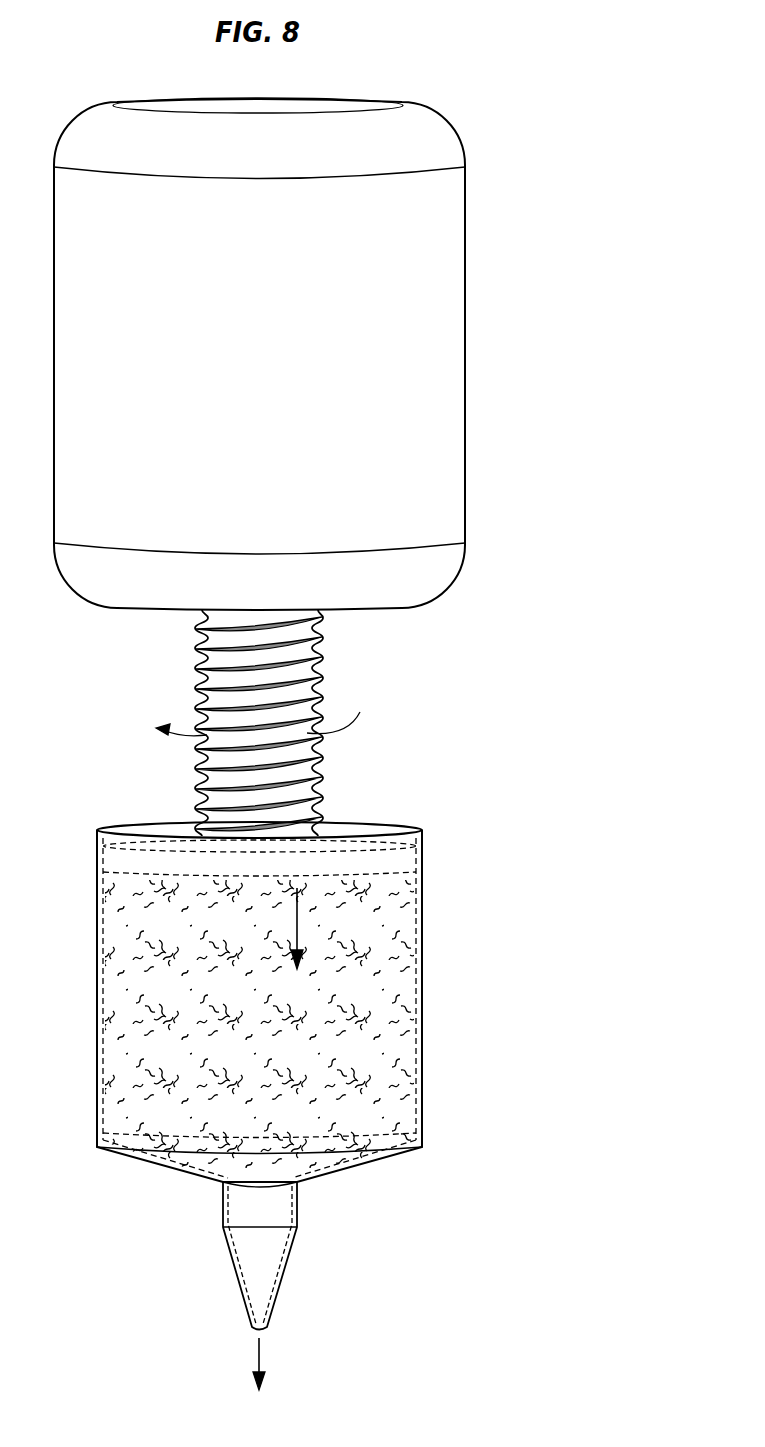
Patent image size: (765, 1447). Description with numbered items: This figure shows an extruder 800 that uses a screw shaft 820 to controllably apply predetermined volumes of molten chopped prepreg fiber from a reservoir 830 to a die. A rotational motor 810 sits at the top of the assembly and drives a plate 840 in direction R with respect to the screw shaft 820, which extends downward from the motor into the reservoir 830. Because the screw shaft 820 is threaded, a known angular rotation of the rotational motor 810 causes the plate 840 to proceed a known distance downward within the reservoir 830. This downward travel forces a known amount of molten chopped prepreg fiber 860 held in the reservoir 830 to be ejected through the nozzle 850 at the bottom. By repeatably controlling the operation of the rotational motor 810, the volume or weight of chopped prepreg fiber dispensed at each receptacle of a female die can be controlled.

The extruder 800 is at (603, 748).
The rotational motor 810 is at (465, 386).
The screw shaft 820 is at (308, 678).
The reservoir 830 is at (97, 1022).
The plate 840 is at (416, 845).
The nozzle 850 is at (232, 1250).
The molten chopped prepreg fiber 860 is at (375, 1027).